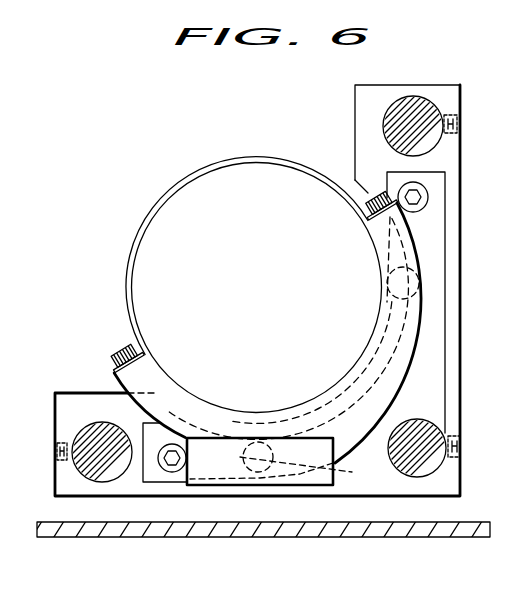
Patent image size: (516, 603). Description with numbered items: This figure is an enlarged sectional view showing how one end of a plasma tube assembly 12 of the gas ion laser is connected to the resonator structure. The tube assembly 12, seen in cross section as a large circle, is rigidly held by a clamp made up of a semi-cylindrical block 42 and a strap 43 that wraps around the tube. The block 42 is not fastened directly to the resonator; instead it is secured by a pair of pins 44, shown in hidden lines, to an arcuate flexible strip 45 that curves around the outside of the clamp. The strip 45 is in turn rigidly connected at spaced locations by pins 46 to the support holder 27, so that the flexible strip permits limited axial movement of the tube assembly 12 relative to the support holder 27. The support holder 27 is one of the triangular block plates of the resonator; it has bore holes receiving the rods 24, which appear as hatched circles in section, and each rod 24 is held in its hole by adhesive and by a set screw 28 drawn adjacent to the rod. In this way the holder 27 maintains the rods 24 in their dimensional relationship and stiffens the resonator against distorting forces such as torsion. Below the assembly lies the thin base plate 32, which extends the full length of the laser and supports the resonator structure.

The plasma tube assembly 12 is at (263, 180).
The rods 24 is at (415, 108).
The support holder 27 is at (452, 382).
The set screw 28 is at (462, 124).
The base plate 32 is at (357, 530).
The semi-cylindrical block 42 is at (177, 400).
The strap 43 is at (153, 207).
The pins 44 is at (417, 284).
The arcuate flexible strip 45 is at (437, 256).
The pins 46 is at (421, 196).